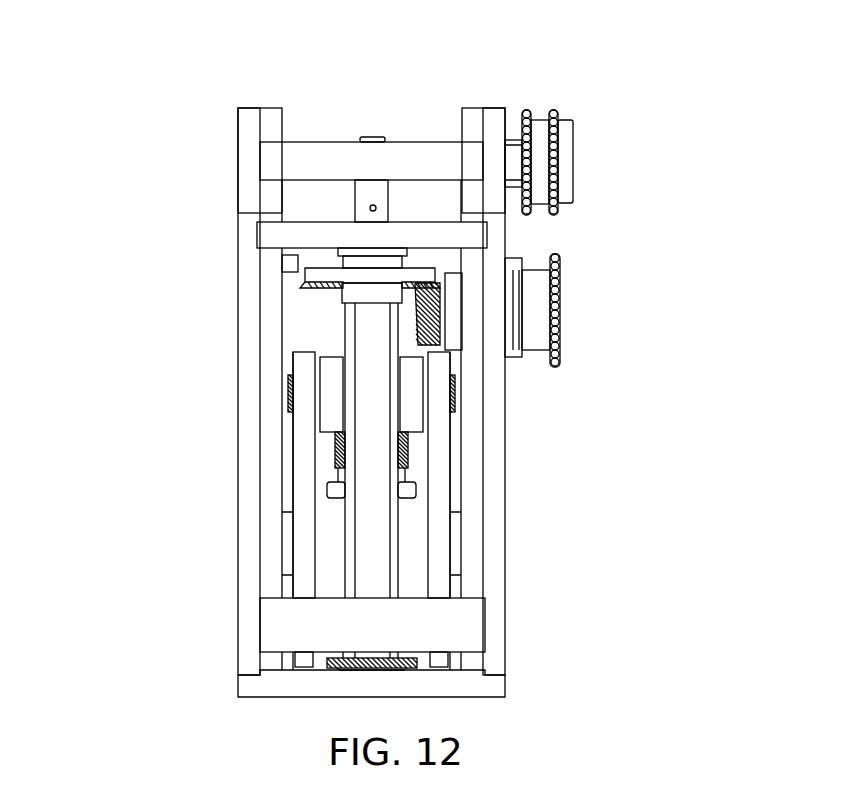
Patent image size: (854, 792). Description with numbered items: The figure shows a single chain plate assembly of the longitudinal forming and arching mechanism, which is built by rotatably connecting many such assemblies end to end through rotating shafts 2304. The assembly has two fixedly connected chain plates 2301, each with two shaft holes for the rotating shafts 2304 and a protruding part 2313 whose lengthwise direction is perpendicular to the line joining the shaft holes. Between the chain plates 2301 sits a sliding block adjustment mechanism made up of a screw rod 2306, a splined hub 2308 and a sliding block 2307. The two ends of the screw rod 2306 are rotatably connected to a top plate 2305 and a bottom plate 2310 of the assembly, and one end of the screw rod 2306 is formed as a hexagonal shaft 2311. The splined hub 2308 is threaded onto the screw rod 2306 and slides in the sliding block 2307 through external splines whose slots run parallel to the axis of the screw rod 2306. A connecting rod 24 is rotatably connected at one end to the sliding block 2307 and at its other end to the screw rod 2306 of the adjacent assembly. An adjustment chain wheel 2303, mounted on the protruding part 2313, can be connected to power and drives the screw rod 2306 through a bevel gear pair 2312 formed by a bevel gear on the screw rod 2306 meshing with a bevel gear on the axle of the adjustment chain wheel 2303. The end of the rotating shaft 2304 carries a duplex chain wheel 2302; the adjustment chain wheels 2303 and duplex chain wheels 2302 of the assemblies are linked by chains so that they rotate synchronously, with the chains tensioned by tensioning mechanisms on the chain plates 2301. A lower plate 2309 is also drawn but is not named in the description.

The connecting rod 24 is at (303, 500).
The chain plate 2301 is at (247, 290).
The duplex chain wheel 2302 is at (573, 162).
The adjustment chain wheel 2303 is at (558, 307).
The rotating shaft 2304 is at (337, 162).
The top plate 2305 is at (285, 235).
The screw rod 2306 is at (360, 348).
The sliding block 2307 is at (328, 395).
The splined hub 2308 is at (337, 457).
The bottom plate 2309 is at (300, 627).
The bottom plate 2310 is at (283, 685).
The hexagonal shaft 2311 is at (368, 140).
The bevel gear pair 2312 is at (438, 322).
The protruding part 2313 is at (505, 457).